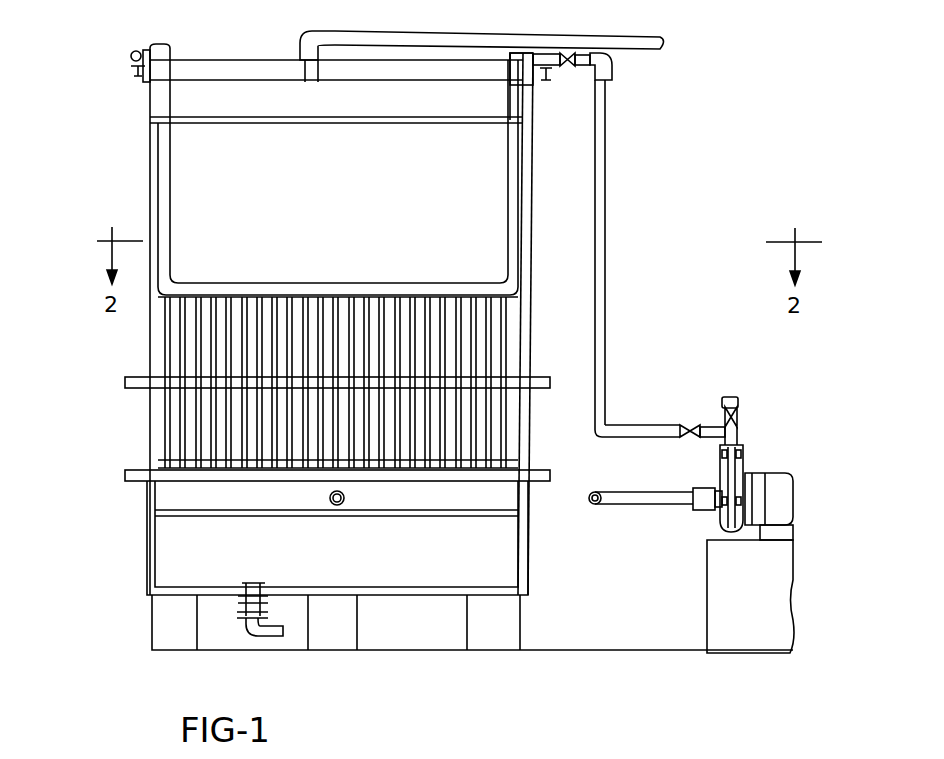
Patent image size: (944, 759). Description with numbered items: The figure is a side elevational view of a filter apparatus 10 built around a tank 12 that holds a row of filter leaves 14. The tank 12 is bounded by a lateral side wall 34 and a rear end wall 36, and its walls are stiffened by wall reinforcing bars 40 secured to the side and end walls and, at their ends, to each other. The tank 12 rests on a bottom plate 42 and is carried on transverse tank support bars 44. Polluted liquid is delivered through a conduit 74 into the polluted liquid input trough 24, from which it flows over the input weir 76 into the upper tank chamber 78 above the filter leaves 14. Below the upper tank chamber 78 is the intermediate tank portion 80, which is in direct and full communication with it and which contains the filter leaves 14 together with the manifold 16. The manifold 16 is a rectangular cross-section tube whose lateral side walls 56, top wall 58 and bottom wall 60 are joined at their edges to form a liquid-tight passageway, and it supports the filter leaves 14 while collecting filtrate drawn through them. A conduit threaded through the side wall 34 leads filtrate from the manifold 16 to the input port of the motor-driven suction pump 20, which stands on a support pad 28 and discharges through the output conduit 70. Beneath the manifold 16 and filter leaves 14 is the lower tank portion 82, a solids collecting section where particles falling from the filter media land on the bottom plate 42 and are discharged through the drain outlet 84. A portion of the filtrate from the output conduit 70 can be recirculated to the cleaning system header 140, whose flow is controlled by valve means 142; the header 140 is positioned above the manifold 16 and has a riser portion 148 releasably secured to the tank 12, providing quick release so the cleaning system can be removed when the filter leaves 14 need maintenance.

The filter apparatus 10 is at (122, 156).
The tank 12 is at (533, 238).
The filter leaves 14 is at (345, 302).
The manifold 16 is at (462, 499).
The motor-driven suction pump 20 is at (746, 458).
The polluted liquid input trough 24 is at (395, 100).
The support pad 28 is at (795, 600).
The lateral side wall 34 is at (162, 570).
The rear end wall 36 is at (147, 546).
The wall reinforcing bars 40 is at (126, 383).
The bottom plate 42 is at (400, 600).
The transverse tank support bars 44 is at (155, 618).
The lateral side walls 56 is at (435, 510).
The top wall 58 is at (222, 481).
The bottom wall 60 is at (272, 523).
The output conduit 70 is at (739, 403).
The conduit 74 is at (366, 33).
The input weir 76 is at (232, 78).
The upper tank chamber 78 is at (346, 194).
The intermediate tank portion 80 is at (160, 344).
The lower tank portion 82 is at (160, 534).
The drain outlet 84 is at (243, 640).
The cleaning system header 140 is at (170, 194).
The valve means 142 is at (570, 68).
The riser portion 148 is at (172, 168).